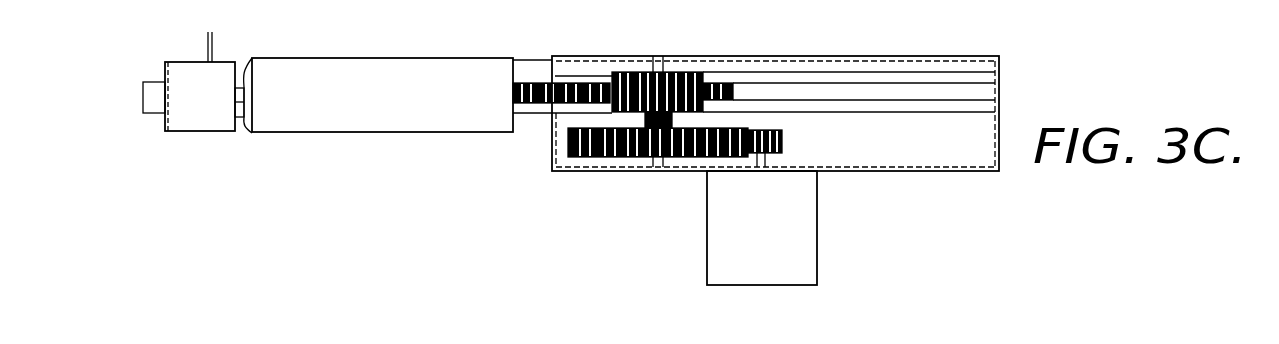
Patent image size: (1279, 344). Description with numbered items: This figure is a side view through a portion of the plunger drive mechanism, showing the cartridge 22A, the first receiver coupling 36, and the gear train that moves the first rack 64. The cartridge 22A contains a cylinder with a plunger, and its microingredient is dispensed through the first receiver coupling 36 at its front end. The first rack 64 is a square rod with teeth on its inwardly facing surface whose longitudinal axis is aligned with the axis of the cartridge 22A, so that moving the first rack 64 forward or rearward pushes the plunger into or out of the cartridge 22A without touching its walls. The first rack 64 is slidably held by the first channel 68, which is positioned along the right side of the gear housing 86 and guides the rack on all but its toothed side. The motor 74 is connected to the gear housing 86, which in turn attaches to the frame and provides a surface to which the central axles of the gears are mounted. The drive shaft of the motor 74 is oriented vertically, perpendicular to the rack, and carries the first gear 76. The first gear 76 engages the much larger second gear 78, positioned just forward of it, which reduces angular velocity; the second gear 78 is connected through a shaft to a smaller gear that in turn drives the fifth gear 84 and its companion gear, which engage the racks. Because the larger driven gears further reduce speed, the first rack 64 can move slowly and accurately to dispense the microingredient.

The first receiver coupling 36 is at (203, 122).
The cartridge 22A is at (390, 133).
The first rack 64 is at (528, 83).
The first channel 68 is at (989, 87).
The fifth gear 84 is at (690, 72).
The second gear 78 is at (633, 155).
The first gear 76 is at (782, 139).
The motor 74 is at (818, 222).
The gear housing 86 is at (948, 171).